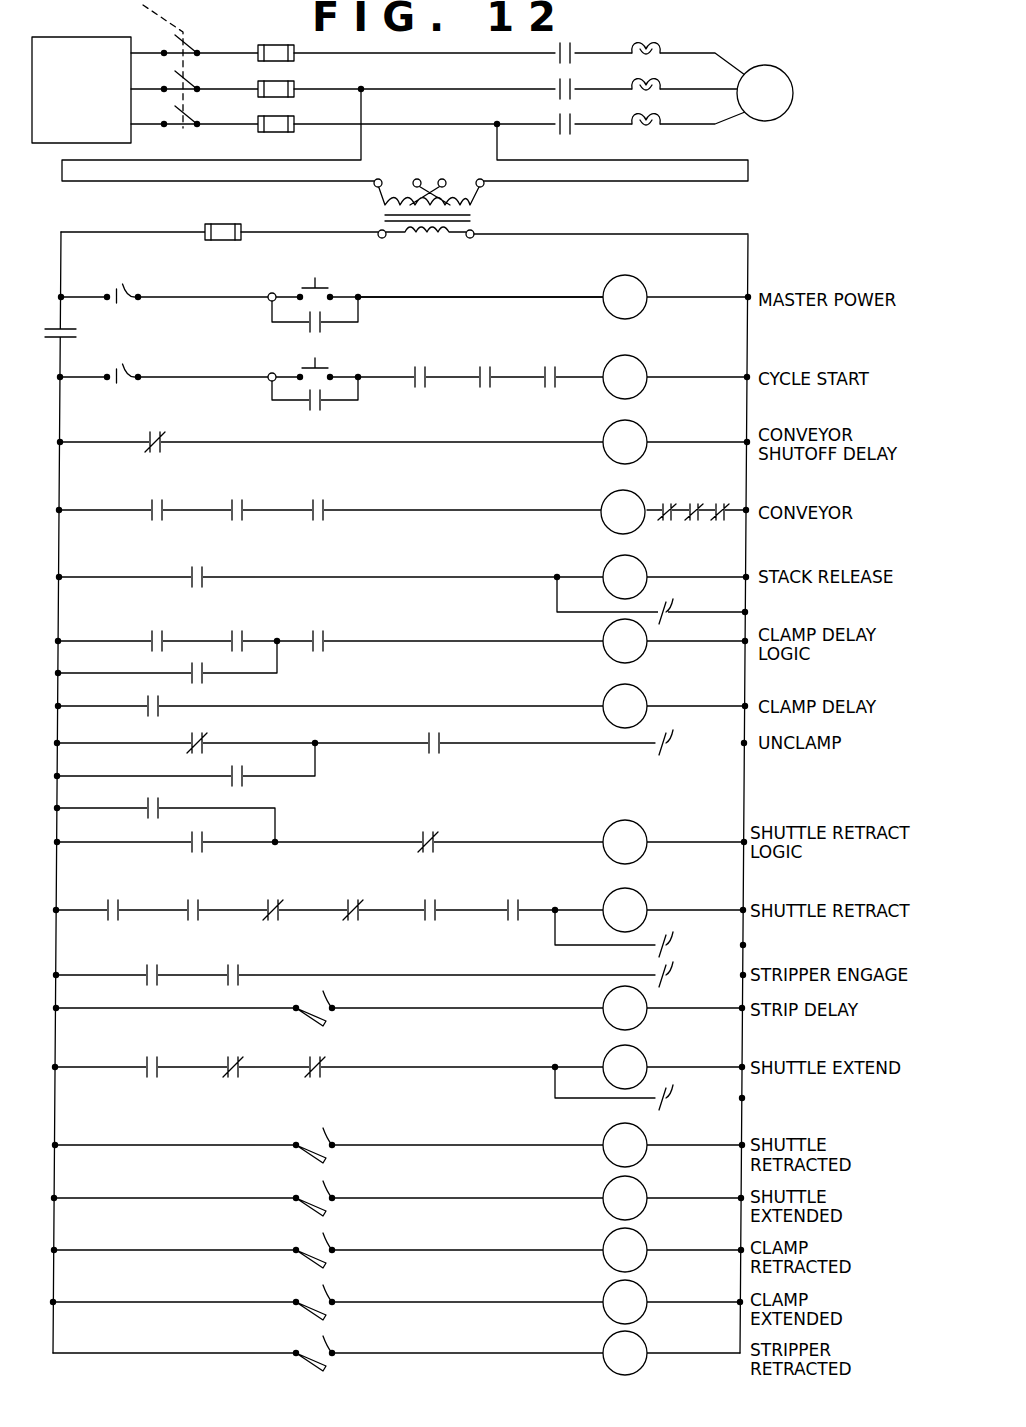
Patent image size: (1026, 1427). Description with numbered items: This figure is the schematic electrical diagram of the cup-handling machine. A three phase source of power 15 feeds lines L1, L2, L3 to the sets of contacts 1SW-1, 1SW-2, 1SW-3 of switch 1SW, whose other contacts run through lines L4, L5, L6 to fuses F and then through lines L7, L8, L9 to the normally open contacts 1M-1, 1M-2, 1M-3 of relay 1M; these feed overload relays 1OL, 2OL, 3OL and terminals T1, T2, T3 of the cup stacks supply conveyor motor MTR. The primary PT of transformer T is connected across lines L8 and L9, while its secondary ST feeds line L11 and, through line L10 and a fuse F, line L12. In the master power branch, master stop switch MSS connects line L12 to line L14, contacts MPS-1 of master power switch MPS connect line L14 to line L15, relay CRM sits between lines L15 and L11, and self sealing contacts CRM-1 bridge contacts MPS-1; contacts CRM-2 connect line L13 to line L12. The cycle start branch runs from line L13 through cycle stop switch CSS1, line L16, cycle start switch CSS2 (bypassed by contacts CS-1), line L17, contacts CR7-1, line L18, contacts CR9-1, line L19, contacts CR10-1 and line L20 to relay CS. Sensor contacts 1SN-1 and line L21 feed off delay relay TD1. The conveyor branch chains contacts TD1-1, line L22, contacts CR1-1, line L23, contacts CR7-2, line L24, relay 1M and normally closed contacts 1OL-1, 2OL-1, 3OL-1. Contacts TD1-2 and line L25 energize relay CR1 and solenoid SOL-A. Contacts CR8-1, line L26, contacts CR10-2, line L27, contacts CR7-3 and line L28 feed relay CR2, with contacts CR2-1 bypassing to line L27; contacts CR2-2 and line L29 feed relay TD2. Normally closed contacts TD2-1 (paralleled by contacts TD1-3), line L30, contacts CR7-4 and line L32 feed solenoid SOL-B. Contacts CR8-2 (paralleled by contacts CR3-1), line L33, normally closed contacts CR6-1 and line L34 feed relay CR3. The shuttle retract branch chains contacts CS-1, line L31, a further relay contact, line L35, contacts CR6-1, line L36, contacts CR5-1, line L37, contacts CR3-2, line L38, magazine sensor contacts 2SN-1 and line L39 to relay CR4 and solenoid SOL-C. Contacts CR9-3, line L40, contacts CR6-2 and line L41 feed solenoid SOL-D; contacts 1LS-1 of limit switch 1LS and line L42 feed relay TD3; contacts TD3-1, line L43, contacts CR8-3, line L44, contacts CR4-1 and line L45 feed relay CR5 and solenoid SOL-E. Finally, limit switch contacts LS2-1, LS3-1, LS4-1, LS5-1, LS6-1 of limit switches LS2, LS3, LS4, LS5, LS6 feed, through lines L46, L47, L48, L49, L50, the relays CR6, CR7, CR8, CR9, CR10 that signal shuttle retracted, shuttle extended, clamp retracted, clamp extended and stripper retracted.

The three phase source of power 15 is at (86, 130).
The switch 1SW is at (185, 22).
The set of contacts 1SW-1 is at (193, 44).
The set of contacts 1SW-2 is at (193, 80).
The set of contacts 1SW-3 is at (193, 116).
The line L1 is at (155, 50).
The line L2 is at (162, 90).
The line L3 is at (148, 126).
The line L4 is at (227, 46).
The line L5 is at (248, 88).
The line L6 is at (206, 126).
The line L7 is at (370, 56).
The line L8 is at (414, 90).
The line L9 is at (456, 124).
The line L10 is at (282, 232).
The line L11 is at (748, 236).
The line L12 is at (61, 234).
The line L13 is at (66, 408).
The fuse F is at (290, 84).
The normally open set of contacts 1M-1 is at (558, 50).
The normally open set of contacts 1M-2 is at (558, 86).
The normally open set of contacts 1M-3 is at (560, 132).
The overload relay 1OL is at (644, 62).
The overload relay 2OL is at (644, 98).
The overload relay 3OL is at (644, 132).
The terminal T1 is at (740, 68).
The terminal T2 is at (728, 98).
The terminal T3 is at (740, 118).
The cup stacks supply conveyor motor MTR is at (782, 102).
The primary PT is at (380, 200).
The transformer T is at (486, 218).
The secondary ST is at (444, 234).
The line L14 is at (236, 300).
The line L15 is at (414, 296).
The line L16 is at (236, 378).
The line L17 is at (378, 376).
The line L18 is at (448, 376).
The line L19 is at (516, 376).
The line L20 is at (582, 376).
The line L21 is at (354, 444).
The line L22 is at (222, 512).
The line L23 is at (302, 512).
The line L24 is at (424, 508).
The line L25 is at (384, 576).
The line L26 is at (190, 640).
The line L27 is at (286, 645).
The line L28 is at (508, 644).
The line L29 is at (454, 706).
The line L30 is at (334, 742).
The line L31 is at (172, 912).
The line L32 is at (498, 742).
The line L33 is at (344, 842).
The line L34 is at (476, 842).
The line L35 is at (210, 912).
The line L36 is at (292, 912).
The line L37 is at (374, 912).
The line L38 is at (496, 912).
The line L39 is at (534, 920).
The line L40 is at (210, 978).
The line L41 is at (392, 974).
The line L42 is at (432, 1007).
The line L43 is at (214, 1070).
The line L44 is at (300, 1070).
The line L45 is at (410, 1070).
The line L46 is at (458, 1145).
The line L47 is at (458, 1198).
The line L48 is at (466, 1250).
The line L49 is at (468, 1302).
The line L50 is at (468, 1353).
The master stop switch MSS is at (128, 292).
The master power switch MPS is at (290, 284).
The normally open contacts MPS-1 is at (322, 288).
The relay CRM is at (636, 286).
The self sealing contacts CRM-1 is at (325, 332).
The normally open contacts CRM-2 is at (60, 330).
The cycle stop switch CSS1 is at (128, 372).
The cycle start switch CSS2 is at (308, 366).
The relay CS is at (640, 366).
The normally open contacts CS-1 is at (306, 412).
The normally open contacts CR7-1 is at (414, 388).
The normally open contacts CR9-1 is at (482, 388).
The normally open contacts CR10-1 is at (548, 388).
The normally closed contacts 1SN-1 is at (150, 438).
The off delay relay TD1 is at (636, 430).
The normally open contacts TD1-1 is at (150, 506).
The normally open contacts TD1-2 is at (188, 572).
The normally open contacts TD1-3 is at (244, 772).
The normally open contacts CR1-1 is at (230, 504).
The normally open contacts CR7-2 is at (312, 504).
The relay 1M is at (610, 496).
The normally closed contacts 1OL-1 is at (670, 502).
The normally closed contacts 2OL-1 is at (700, 522).
The normally closed contacts 3OL-1 is at (726, 500).
The relay CR1 is at (636, 572).
The solenoid SOL-A is at (664, 604).
The normally open contacts CR8-1 is at (150, 636).
The normally open contacts CR10-2 is at (244, 630).
The normally open contacts CR7-3 is at (324, 634).
The relay CR2 is at (644, 636).
The normally open contacts CR2-1 is at (190, 680).
The normally open contacts CR2-2 is at (146, 712).
The relay TD2 is at (636, 700).
The normally closed contacts TD2-1 is at (204, 738).
The normally open contacts CR7-4 is at (446, 746).
The solenoid SOL-B is at (664, 734).
The normally open contacts CR3-1 is at (146, 802).
The normally open contacts CR8-2 is at (190, 836).
The normally closed contacts CR6-1 is at (424, 836).
The relay CR3 is at (640, 830).
The normally closed contacts CR5-1 is at (348, 902).
The normally open contacts CR3-2 is at (424, 902).
The normally open contacts 2SN-1 is at (518, 902).
The relay CR4 is at (634, 900).
The solenoid SOL-C is at (662, 936).
The normally open contacts CR9-3 is at (146, 970).
The normally open contacts CR6-2 is at (240, 968).
The solenoid SOL-D is at (664, 968).
The limit switch 1LS is at (322, 1002).
The normally open limit switch contacts 1LS-1 is at (328, 1018).
The relay TD3 is at (636, 1004).
The normally open contacts TD3-1 is at (146, 1062).
The normally closed contacts CR8-3 is at (228, 1060).
The normally closed contacts CR4-1 is at (320, 1060).
The relay CR5 is at (640, 1060).
The solenoid SOL-E is at (662, 1092).
The limit switch LS2 is at (285, 1164).
The normally open limit switch contacts LS2-1 is at (324, 1146).
The relay CR6 is at (640, 1140).
The limit switch LS3 is at (285, 1216).
The normally open limit switch contacts LS3-1 is at (324, 1198).
The relay CR7 is at (640, 1194).
The limit switch LS4 is at (285, 1270).
The normally open limit switch contacts LS4-1 is at (324, 1250).
The relay CR8 is at (636, 1248).
The limit switch LS5 is at (285, 1316).
The normally open limit switch contacts LS5-1 is at (324, 1302).
The relay CR9 is at (640, 1296).
The limit switch LS6 is at (285, 1368).
The normally open limit switch contacts LS6-1 is at (324, 1352).
The relay CR10 is at (640, 1348).